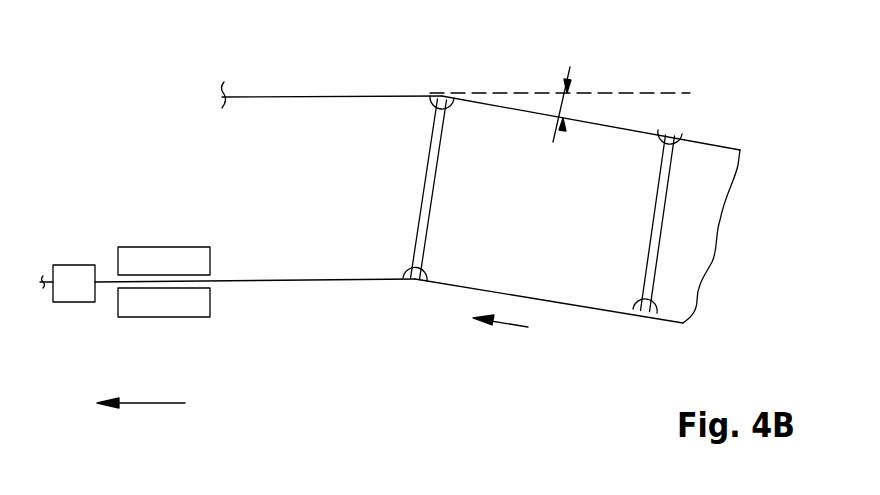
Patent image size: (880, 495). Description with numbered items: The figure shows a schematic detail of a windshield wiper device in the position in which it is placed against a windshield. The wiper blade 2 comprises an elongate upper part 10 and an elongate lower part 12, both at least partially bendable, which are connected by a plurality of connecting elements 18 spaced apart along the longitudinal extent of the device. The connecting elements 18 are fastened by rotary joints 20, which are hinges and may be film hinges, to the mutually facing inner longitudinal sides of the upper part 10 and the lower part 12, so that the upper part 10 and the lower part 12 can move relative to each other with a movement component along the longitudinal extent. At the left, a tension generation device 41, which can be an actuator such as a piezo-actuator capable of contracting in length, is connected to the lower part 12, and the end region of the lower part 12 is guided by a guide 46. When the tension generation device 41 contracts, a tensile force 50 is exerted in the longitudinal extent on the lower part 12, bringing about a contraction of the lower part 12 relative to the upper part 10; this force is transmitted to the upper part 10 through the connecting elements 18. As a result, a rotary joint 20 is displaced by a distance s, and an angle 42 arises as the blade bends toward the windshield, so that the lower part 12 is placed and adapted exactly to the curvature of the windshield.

The wiper blade 2 is at (738, 309).
The upper part 10 is at (360, 98).
The lower part 12 is at (358, 276).
The connecting elements 18 is at (432, 177).
The rotary joints 20 is at (442, 96).
The tension generation device 41 is at (75, 300).
The angle 42 is at (568, 106).
The guide 46 is at (172, 310).
The tensile force 50 is at (148, 404).
The distance s is at (507, 324).